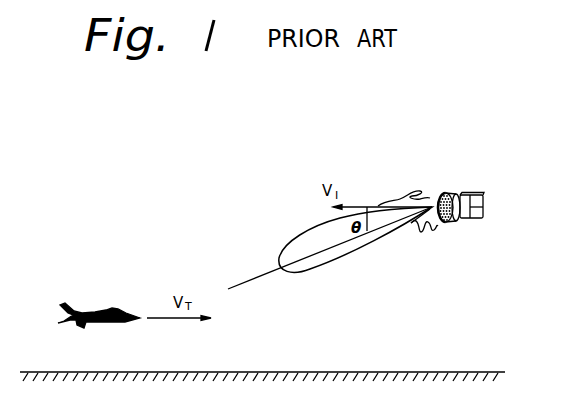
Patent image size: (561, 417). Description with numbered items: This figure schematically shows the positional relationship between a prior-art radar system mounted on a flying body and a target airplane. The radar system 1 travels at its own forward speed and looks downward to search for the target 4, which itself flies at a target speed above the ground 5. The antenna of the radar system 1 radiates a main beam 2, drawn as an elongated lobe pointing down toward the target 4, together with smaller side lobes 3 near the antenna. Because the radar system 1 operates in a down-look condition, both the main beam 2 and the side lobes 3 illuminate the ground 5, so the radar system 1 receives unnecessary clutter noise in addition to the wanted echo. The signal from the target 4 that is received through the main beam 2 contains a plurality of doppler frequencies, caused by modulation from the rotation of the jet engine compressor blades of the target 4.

The radar system 1 is at (468, 192).
The main beam of the antenna 2 is at (284, 252).
The side lobes 3 is at (437, 227).
The target 4 is at (113, 309).
The ground 5 is at (483, 371).